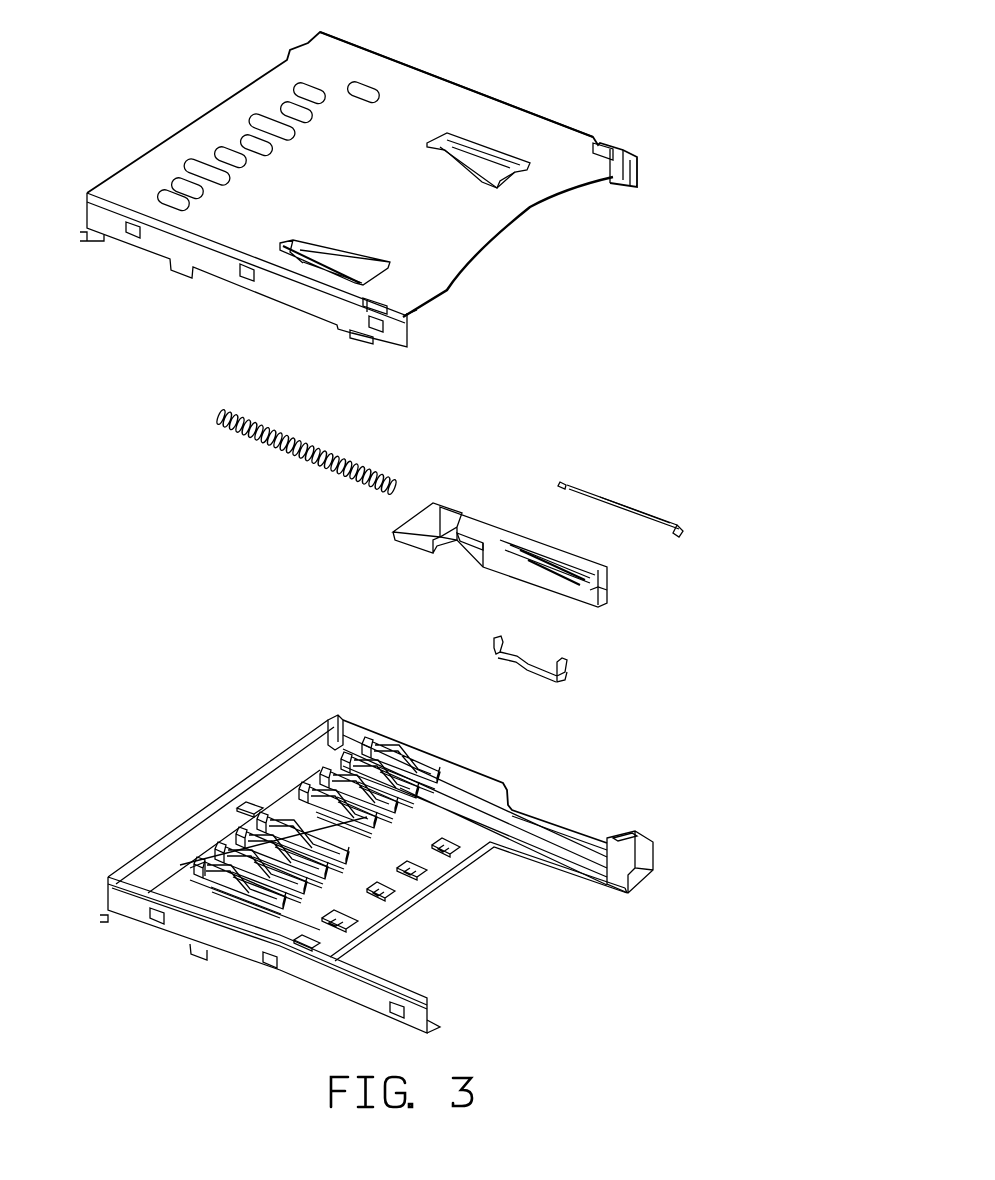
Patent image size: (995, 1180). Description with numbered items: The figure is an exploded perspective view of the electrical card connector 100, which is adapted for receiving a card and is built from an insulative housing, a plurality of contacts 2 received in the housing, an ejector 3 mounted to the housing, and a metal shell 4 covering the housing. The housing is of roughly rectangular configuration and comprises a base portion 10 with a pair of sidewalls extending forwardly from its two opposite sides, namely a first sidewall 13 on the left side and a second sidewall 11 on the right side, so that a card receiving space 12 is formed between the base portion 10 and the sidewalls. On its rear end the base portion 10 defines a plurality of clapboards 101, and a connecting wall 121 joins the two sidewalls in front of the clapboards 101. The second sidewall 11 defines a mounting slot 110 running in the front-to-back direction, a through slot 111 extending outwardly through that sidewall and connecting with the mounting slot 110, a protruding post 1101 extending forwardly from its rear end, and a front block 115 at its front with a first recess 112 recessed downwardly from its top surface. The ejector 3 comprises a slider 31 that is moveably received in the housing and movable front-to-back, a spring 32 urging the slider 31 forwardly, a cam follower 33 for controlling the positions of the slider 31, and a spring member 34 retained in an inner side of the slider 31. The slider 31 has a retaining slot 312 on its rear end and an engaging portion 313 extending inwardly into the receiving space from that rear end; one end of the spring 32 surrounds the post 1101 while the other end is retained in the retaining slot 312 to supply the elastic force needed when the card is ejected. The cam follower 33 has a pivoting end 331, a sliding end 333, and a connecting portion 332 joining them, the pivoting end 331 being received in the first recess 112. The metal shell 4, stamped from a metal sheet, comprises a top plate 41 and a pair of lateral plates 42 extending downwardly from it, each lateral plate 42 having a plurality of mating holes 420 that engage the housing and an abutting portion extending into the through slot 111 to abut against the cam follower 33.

The electrical card connector 100 is at (710, 110).
The metal shell 4 is at (478, 72).
The top plate 41 is at (490, 163).
The lateral plate 42 is at (313, 303).
The mating hole 420 is at (250, 282).
The ejector 3 is at (193, 492).
The slider 31 is at (505, 540).
The retaining slot 312 is at (470, 555).
The engaging portion 313 is at (410, 525).
The spring 32 is at (303, 437).
The cam follower 33 is at (605, 485).
The pivoting end 331 is at (683, 540).
The connecting portion 332 is at (640, 508).
The sliding end 333 is at (561, 480).
The spring member 34 is at (530, 660).
The contacts 2 is at (377, 785).
The base portion 10 is at (213, 833).
The clapboards 101 is at (263, 840).
The protruding post 1101 is at (336, 720).
The second sidewall 11 is at (483, 770).
The mounting slot 110 is at (425, 783).
The through slot 111 is at (527, 815).
The first recess 112 is at (618, 835).
The front block 115 is at (636, 847).
The card receiving space 12 is at (470, 903).
The connecting wall 121 is at (290, 922).
The first sidewall 13 is at (370, 983).